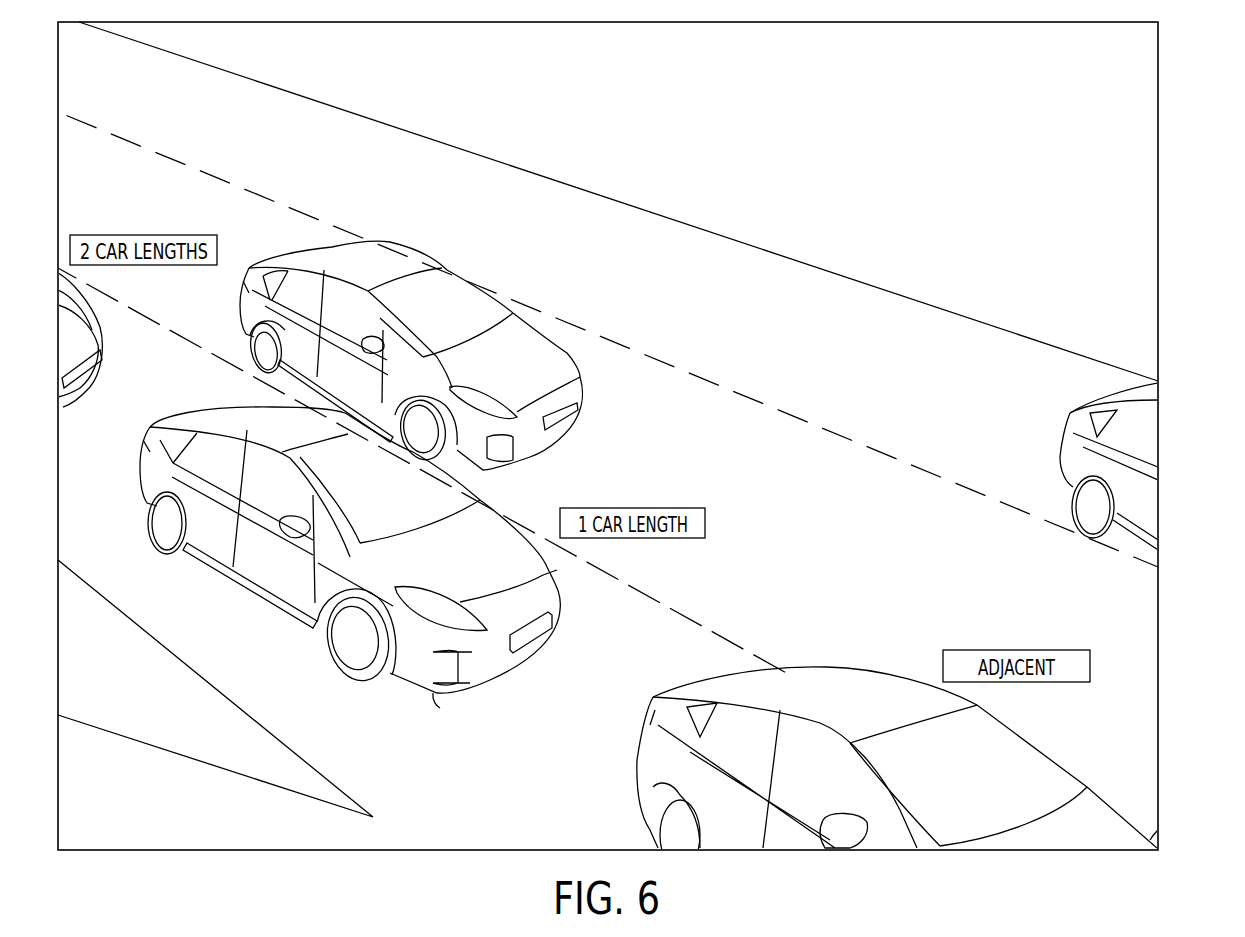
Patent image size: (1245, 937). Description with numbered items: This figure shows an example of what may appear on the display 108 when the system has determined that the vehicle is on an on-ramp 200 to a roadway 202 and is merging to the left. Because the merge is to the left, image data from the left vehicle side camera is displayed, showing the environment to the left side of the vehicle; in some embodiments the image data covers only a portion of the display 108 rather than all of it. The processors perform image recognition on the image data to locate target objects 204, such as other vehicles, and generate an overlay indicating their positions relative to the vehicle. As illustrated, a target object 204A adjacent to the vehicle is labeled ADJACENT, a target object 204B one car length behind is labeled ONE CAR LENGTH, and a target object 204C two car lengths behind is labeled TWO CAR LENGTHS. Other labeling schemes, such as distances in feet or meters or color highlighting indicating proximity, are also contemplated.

The display 108 is at (1158, 347).
The on-ramp 200 is at (120, 736).
The roadway 202 is at (742, 242).
The target objects 204 is at (408, 253).
The target object adjacent to the vehicle 204A is at (838, 668).
The target object one car behind the vehicle 204B is at (456, 697).
The target object two car lengths behind the vehicle 204C is at (75, 410).